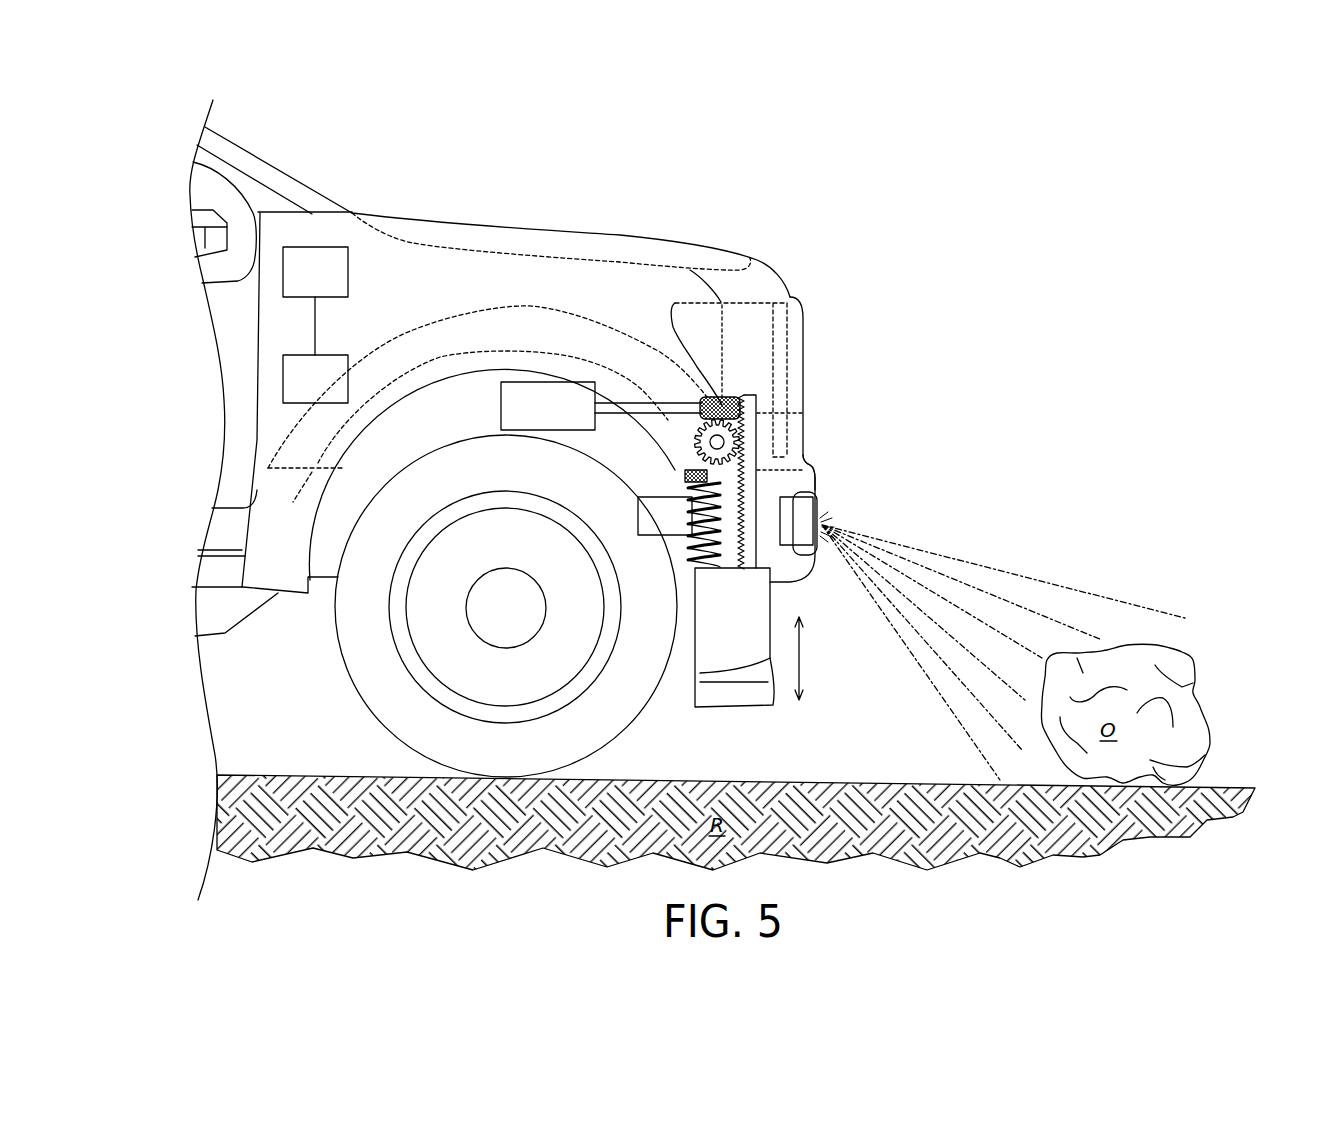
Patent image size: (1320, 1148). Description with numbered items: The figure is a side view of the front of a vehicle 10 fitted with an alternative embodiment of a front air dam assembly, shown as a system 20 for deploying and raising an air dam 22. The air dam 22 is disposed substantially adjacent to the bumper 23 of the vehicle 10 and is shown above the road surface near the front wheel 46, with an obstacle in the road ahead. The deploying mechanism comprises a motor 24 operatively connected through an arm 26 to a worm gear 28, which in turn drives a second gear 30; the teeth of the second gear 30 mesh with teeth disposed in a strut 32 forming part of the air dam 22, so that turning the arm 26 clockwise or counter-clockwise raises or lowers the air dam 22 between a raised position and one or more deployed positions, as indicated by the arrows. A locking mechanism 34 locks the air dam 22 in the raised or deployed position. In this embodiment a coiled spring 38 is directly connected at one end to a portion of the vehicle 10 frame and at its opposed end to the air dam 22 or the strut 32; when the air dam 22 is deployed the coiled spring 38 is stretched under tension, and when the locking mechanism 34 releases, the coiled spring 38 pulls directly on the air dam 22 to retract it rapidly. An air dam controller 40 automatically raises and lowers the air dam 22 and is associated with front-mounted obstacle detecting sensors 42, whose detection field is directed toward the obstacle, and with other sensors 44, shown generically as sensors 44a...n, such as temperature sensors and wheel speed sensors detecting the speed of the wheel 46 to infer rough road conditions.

The vehicle 10 is at (372, 162).
The system 20 is at (628, 301).
The air dam 22 is at (752, 617).
The bumper 23 is at (810, 475).
The motor 24 is at (517, 405).
The arm 26 is at (610, 403).
The worm gear 28 is at (726, 400).
The second gear 30 is at (693, 437).
The strut 32 is at (753, 417).
The locking mechanism 34 is at (663, 522).
The coiled spring 38 is at (695, 540).
The air dam controller 40 is at (327, 268).
The sensors 44 is at (372, 370).
The sensors 44a...n is at (325, 378).
The obstacle detecting sensors 42 is at (818, 517).
The wheel 46 is at (362, 642).